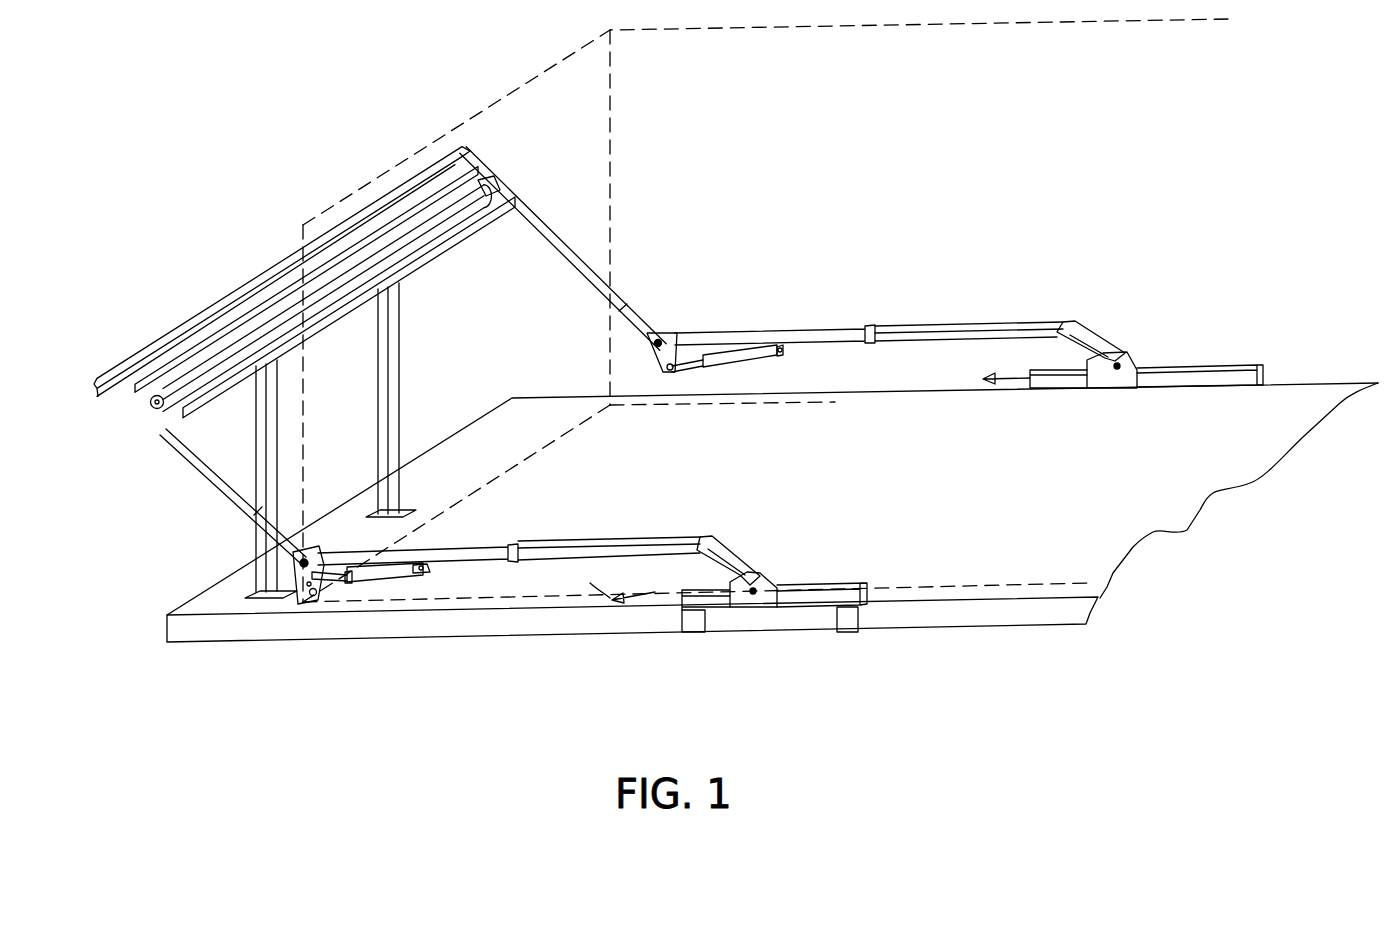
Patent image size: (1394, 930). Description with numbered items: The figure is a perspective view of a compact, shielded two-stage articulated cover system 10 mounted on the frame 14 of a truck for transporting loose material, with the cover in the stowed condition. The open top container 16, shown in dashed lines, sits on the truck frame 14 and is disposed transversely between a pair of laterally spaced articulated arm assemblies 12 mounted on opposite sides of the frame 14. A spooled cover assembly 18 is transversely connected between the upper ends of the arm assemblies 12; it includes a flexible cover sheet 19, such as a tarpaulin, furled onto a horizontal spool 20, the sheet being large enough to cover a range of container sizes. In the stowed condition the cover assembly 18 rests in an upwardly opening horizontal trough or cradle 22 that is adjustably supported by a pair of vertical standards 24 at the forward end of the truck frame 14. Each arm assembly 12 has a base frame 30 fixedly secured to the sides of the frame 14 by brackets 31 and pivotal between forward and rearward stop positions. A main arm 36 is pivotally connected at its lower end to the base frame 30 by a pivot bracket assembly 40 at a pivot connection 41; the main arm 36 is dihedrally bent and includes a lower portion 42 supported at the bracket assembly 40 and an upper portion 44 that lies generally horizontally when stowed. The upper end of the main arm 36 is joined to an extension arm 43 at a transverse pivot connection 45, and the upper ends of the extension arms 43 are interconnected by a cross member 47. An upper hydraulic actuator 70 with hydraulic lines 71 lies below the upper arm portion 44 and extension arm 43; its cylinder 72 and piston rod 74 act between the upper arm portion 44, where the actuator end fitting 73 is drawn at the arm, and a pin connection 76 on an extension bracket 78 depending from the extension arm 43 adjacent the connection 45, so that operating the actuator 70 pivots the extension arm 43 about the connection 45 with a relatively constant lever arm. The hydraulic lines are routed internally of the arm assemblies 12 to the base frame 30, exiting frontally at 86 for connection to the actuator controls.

The articulated cover system 10 is at (380, 363).
The arm assembly 12 is at (711, 493).
The truck frame 14 is at (323, 628).
The container 16 is at (537, 77).
The spooled cover assembly 18 is at (155, 409).
The cover sheet 19 is at (433, 230).
The spool 20 is at (492, 190).
The cradle 22 is at (188, 405).
The vertical standard 24 is at (398, 370).
The base frame 30 is at (813, 585).
The bracket 31 is at (695, 627).
The main arm 36 is at (620, 541).
The pivot bracket assembly 40 is at (760, 573).
The pivot connection 41 is at (753, 592).
The lower portion 42 is at (732, 570).
The extension arm 43 is at (613, 292).
The upper portion 44 is at (555, 550).
The pivot connection 45 is at (293, 563).
The cross member 47 is at (137, 355).
The upper hydraulic actuator 70 is at (573, 552).
The hydraulic lines 71 is at (358, 583).
The cylinder 72 is at (393, 580).
The clevis 73 is at (423, 565).
The piston rod 74 is at (348, 578).
The pin connection 76 is at (317, 580).
The extension bracket 78 is at (300, 583).
The hydraulic line exit 86 is at (787, 473).